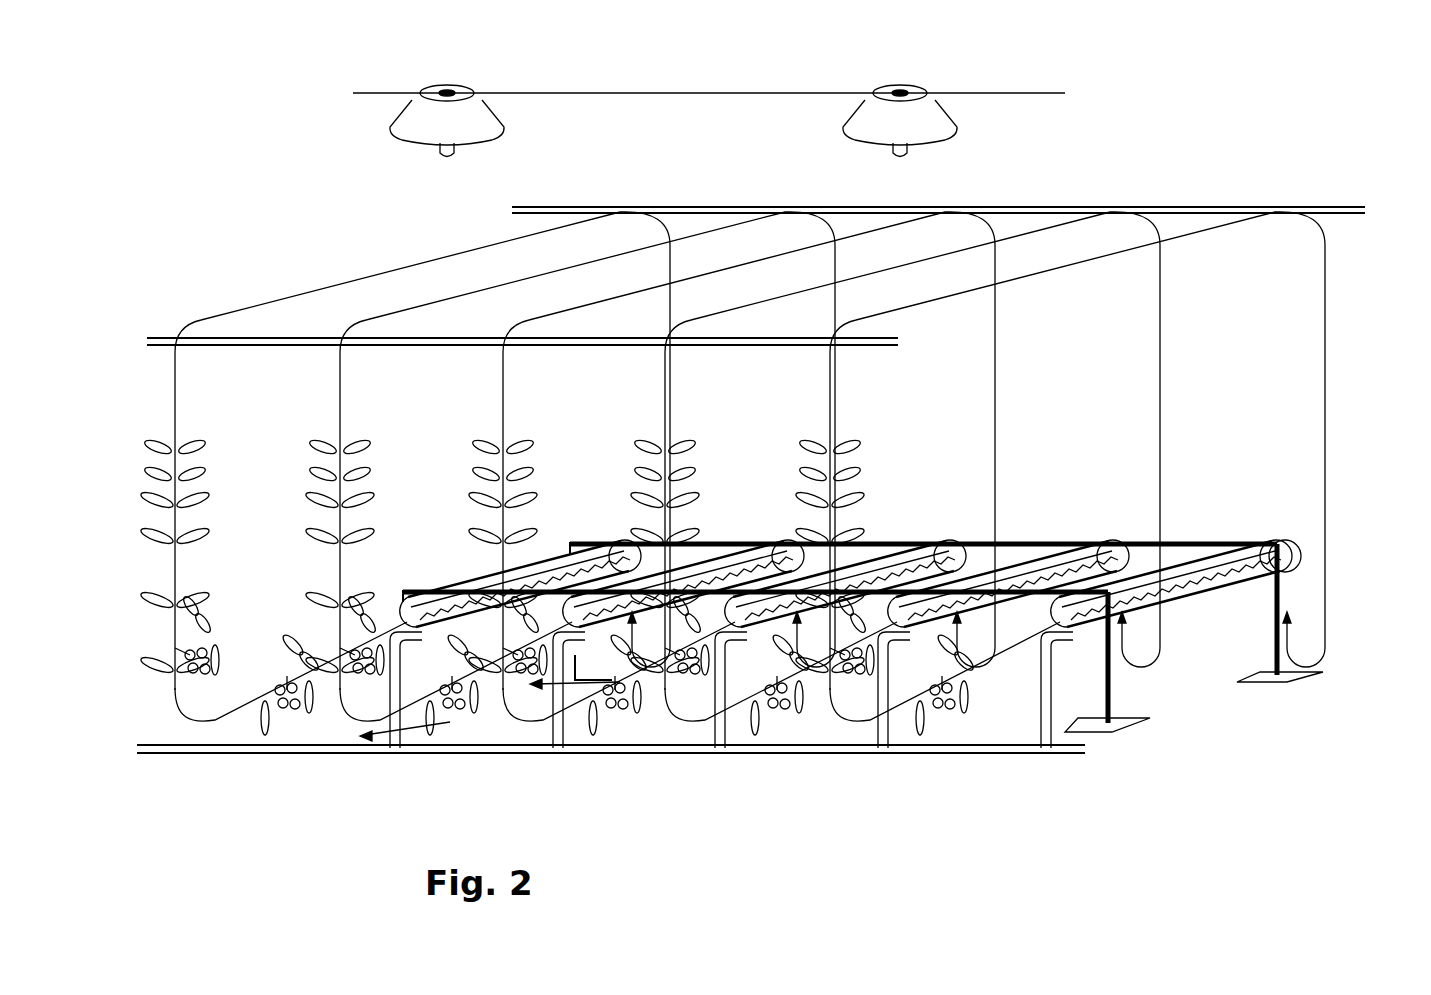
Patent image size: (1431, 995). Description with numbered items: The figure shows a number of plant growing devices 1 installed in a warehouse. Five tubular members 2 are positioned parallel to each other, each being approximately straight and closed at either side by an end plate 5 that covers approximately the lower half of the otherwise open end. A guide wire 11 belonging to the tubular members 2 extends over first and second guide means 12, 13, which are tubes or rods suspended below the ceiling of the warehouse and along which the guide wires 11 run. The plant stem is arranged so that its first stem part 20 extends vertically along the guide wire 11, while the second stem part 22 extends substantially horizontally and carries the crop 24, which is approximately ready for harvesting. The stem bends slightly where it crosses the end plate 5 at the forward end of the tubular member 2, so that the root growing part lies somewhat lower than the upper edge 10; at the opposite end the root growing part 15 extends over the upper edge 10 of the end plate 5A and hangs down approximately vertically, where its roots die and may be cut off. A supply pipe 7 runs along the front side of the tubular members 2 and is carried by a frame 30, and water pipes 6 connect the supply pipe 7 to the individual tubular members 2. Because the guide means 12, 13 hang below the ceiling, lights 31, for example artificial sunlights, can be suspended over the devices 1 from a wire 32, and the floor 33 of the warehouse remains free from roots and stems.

The device 1 is at (1310, 148).
The tubular member 2 is at (1150, 562).
The end plate 5 is at (729, 633).
The end plate 5A is at (1313, 539).
The water pipe 6 is at (716, 728).
The supply pipe 7 is at (600, 754).
The upper edge 10 is at (1291, 536).
The guide wire 11 is at (173, 398).
The first guide means 12 is at (245, 338).
The second guide means 13 is at (1212, 207).
The root growing part 15 is at (1187, 598).
The first stem part 20 is at (173, 573).
The second stem part 22 is at (230, 718).
The crop 24 is at (287, 716).
The frame 30 is at (1112, 701).
The light 31 is at (897, 85).
The wire 32 is at (1010, 93).
The floor 33 is at (1318, 746).